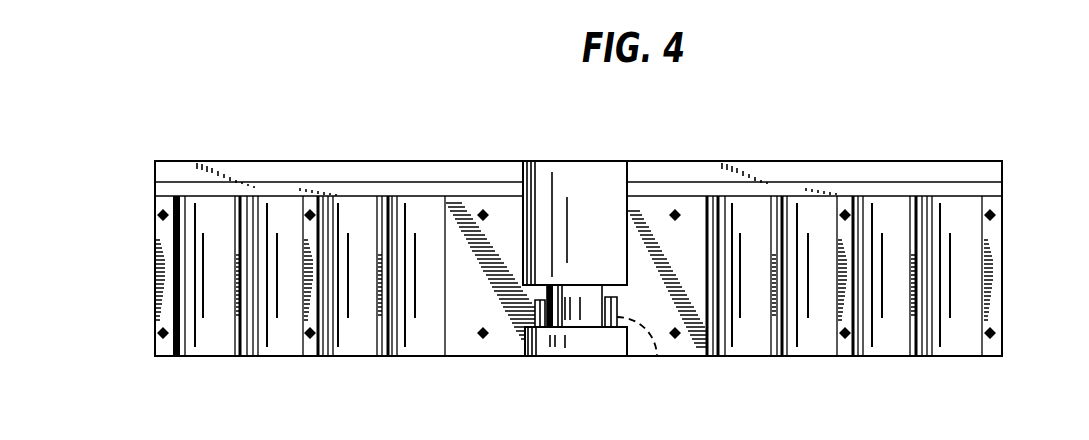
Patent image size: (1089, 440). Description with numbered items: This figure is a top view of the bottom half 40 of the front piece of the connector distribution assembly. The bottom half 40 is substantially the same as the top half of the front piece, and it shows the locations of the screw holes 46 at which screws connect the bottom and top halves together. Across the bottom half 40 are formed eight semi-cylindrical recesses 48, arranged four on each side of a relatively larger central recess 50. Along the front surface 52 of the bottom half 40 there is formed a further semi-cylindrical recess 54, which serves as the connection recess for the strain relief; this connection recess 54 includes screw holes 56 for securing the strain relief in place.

The bottom half 40 is at (1080, 194).
The screw holes 46 is at (309, 215).
The semi-cylindrical recesses 48 is at (278, 217).
The central recess 50 is at (578, 178).
The front surface 52 is at (683, 356).
The semi-cylindrical recess 54 is at (565, 338).
The screw holes 56 is at (643, 359).